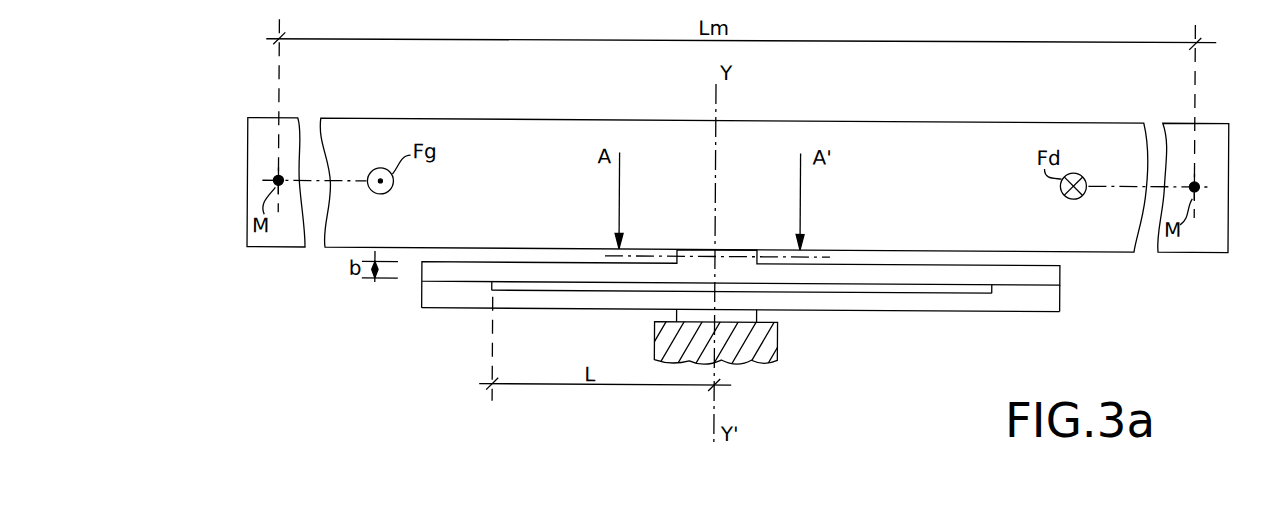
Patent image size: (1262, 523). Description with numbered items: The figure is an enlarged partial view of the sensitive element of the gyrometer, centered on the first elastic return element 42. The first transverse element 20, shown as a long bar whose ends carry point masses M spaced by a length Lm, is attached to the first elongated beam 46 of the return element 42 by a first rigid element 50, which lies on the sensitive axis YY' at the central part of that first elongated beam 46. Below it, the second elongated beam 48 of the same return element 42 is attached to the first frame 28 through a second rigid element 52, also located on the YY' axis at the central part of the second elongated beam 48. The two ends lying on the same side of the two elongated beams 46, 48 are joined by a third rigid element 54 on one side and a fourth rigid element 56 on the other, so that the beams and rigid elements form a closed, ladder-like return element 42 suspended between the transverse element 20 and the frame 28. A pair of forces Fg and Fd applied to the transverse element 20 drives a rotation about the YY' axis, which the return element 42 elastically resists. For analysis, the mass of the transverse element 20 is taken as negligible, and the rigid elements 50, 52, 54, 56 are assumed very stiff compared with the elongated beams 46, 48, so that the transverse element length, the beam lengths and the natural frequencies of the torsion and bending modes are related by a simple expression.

The first transverse element 20 is at (290, 120).
The first frame 28 is at (750, 343).
The first elastic return element 42 is at (745, 302).
The first elongated beam 46 is at (915, 277).
The second elongated beam 48 is at (938, 304).
The first rigid element 50 is at (737, 256).
The second rigid element 52 is at (737, 315).
The third rigid element 54 is at (458, 285).
The fourth rigid element 56 is at (1031, 291).